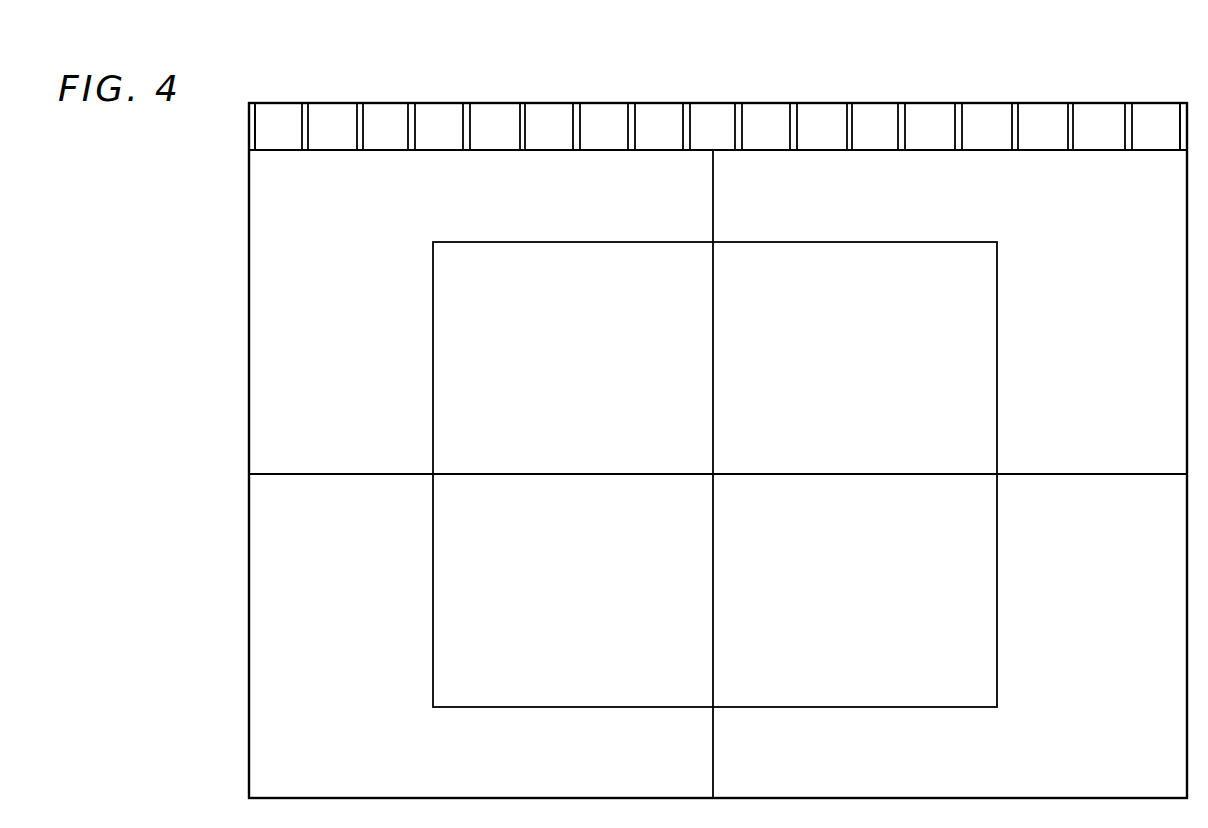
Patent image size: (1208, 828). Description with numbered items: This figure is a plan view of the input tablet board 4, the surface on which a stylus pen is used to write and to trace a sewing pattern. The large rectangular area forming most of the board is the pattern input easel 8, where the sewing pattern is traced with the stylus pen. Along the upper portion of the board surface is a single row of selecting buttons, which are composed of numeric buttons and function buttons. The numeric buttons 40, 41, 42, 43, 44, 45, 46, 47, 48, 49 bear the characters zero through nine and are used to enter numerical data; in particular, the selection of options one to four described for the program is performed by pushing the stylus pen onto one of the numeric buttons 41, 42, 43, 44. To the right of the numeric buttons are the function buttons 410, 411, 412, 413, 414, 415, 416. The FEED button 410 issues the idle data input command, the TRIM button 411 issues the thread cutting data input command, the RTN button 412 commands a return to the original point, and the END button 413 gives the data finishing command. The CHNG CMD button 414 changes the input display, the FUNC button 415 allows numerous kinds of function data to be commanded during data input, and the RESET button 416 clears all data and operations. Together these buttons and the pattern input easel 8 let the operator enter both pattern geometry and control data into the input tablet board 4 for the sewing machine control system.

The input tablet board 4 is at (249, 270).
The pattern input easel 8 is at (997, 528).
The numeric button 40 is at (292, 103).
The numeric button 41 is at (342, 103).
The numeric button 42 is at (395, 103).
The numeric button 43 is at (450, 103).
The numeric button 44 is at (504, 103).
The numeric button 45 is at (559, 103).
The numeric button 46 is at (616, 103).
The numeric button 47 is at (669, 103).
The numeric button 48 is at (723, 103).
The numeric button 49 is at (776, 103).
The function button 410 is at (830, 103).
The function button 411 is at (884, 103).
The function button 412 is at (944, 103).
The function button 413 is at (1004, 103).
The function button 414 is at (1056, 103).
The function button 415 is at (1111, 103).
The function button 416 is at (1168, 103).